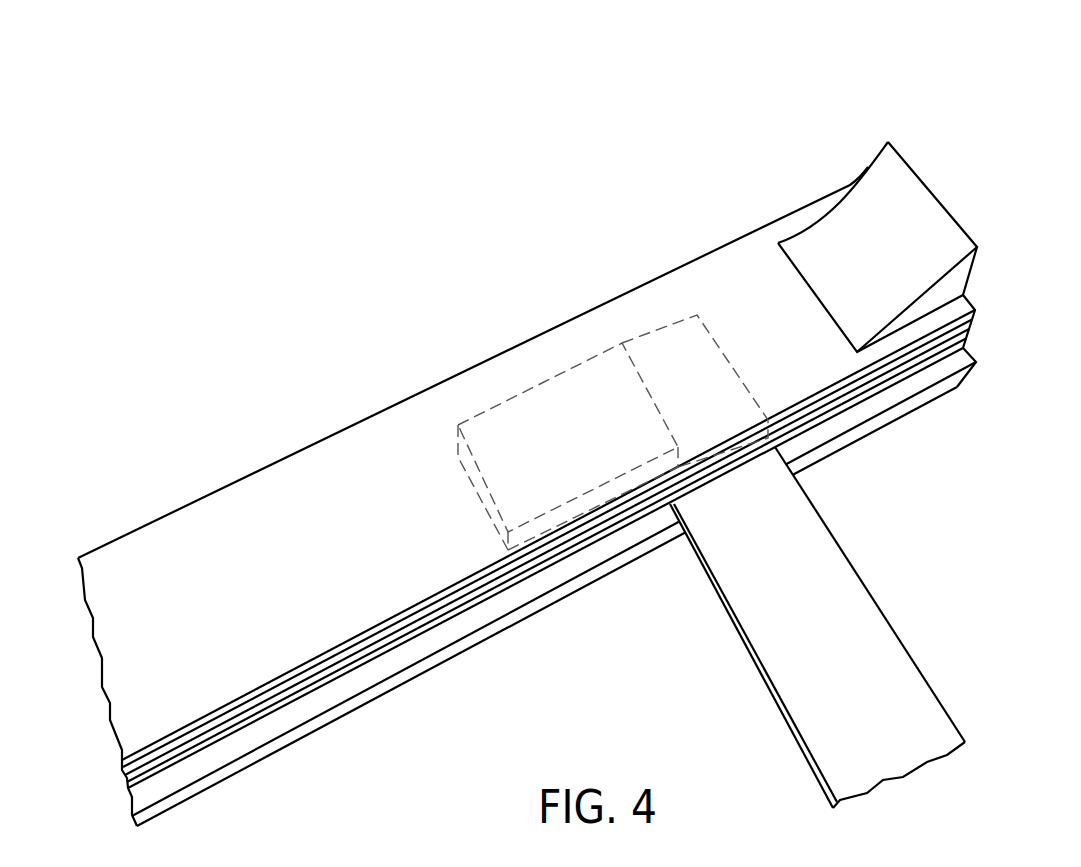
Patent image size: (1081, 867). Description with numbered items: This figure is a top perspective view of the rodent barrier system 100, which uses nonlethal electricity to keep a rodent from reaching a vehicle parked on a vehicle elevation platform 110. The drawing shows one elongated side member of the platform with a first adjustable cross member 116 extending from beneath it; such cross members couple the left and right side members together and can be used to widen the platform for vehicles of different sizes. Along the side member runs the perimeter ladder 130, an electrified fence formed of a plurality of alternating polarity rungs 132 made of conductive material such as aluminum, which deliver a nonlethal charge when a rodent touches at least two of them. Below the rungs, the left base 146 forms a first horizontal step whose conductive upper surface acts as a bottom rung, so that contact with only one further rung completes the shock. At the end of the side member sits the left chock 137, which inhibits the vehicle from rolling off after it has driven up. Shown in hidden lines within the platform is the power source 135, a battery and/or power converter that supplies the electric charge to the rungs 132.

The rodent barrier system 100 is at (950, 131).
The vehicle elevation platform 110 is at (1028, 157).
The first adjustable cross member 116 is at (900, 648).
The perimeter ladder 130 is at (457, 599).
The rungs 132 is at (357, 663).
The power source 135 is at (578, 378).
The left chock 137 is at (880, 172).
The left base 146 is at (580, 565).